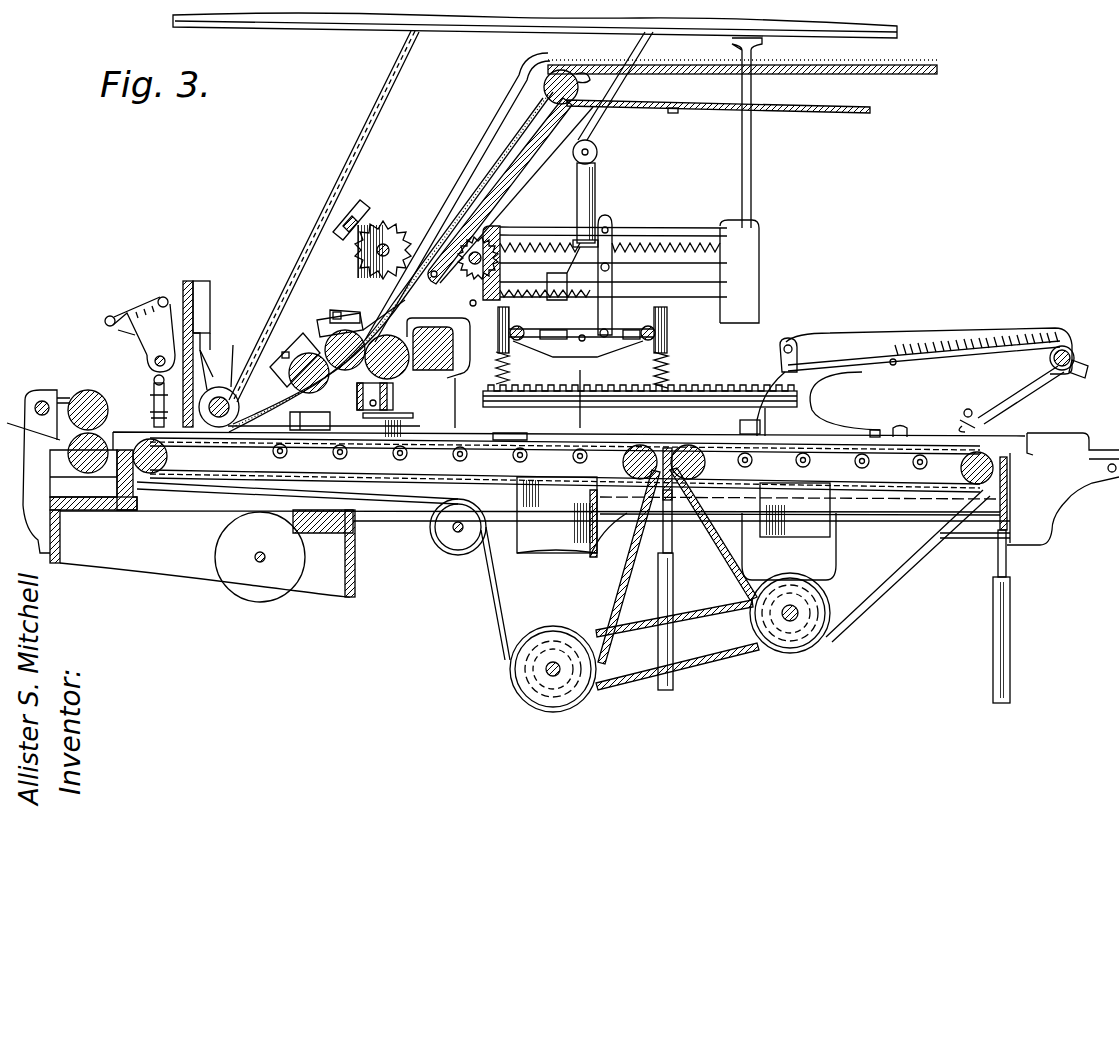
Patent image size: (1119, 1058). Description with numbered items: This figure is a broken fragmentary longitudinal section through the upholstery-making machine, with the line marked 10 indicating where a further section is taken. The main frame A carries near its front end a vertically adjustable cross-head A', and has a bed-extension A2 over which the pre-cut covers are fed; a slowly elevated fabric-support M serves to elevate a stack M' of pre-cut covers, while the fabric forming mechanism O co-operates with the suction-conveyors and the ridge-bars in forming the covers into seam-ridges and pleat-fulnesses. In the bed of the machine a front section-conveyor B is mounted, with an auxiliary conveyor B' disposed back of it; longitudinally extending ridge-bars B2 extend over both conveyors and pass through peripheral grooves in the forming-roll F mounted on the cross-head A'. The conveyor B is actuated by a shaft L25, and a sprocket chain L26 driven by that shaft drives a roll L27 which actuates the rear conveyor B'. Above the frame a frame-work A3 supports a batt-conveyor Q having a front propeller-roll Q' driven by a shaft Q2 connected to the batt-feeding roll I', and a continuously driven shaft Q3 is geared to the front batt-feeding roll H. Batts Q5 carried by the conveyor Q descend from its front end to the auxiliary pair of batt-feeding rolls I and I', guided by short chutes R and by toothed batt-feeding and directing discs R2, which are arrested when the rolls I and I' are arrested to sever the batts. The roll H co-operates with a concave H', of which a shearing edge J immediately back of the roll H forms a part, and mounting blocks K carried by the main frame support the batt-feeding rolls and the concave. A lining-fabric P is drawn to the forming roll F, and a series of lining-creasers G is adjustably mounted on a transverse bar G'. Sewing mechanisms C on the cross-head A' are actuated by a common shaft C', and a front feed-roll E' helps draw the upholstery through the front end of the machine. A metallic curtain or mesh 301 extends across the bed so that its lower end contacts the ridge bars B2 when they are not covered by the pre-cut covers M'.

The frame-work A3 is at (327, 30).
The batt-conveyor Q is at (742, 106).
The front propeller-roll Q' is at (567, 110).
The batts Q5 is at (480, 170).
The shaft Q2 is at (505, 165).
The continuously driven shaft Q3 is at (490, 198).
The fabric forming mechanism O is at (657, 223).
The mounting blocks K is at (457, 402).
The stack of pre-cut covers M' is at (640, 411).
The section line 10 is at (442, 413).
The transverse bar G' is at (297, 458).
The concave H' is at (354, 458).
The metallic curtain or mesh 301 is at (420, 459).
The front feed-roll E' is at (62, 457).
The main frame A is at (202, 526).
The cross-head A' is at (221, 338).
The sewing mechanisms C is at (140, 341).
The common shaft C' is at (110, 345).
The forming-roll F is at (224, 387).
The lining-creasers G is at (284, 367).
The front batt-feeding roll H is at (331, 331).
The auxiliary batt-feeding roll I is at (374, 325).
The auxiliary batt-feeding roll I' is at (388, 348).
The shearing edge J is at (400, 397).
The guides or short chutes R is at (417, 250).
The toothed batt-feeding and directing discs R2 is at (382, 218).
The lining-fabric P is at (337, 193).
The fabric-support or cover-support M is at (934, 361).
The ridge-bars B2 is at (840, 437).
The bed-extension A2 is at (1050, 520).
The front section-conveyor B is at (323, 571).
The shaft L25 is at (550, 677).
The roll L27 is at (803, 637).
The sprocket chain L26 is at (713, 660).
The auxiliary conveyor B' is at (908, 566).